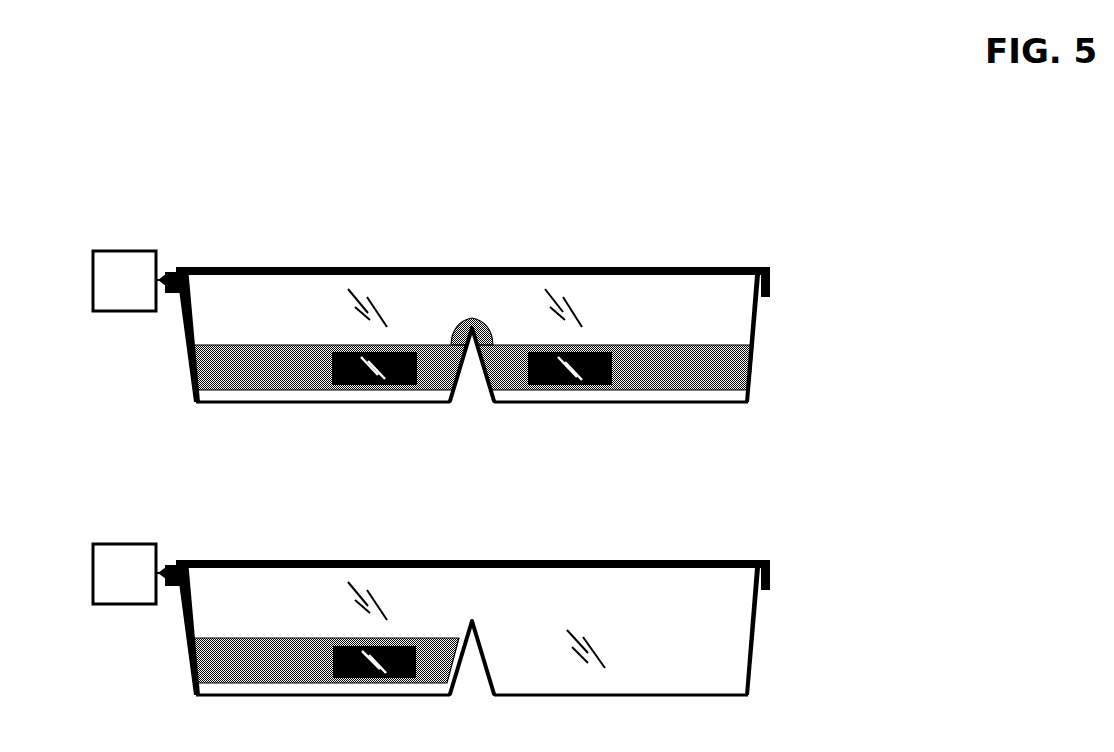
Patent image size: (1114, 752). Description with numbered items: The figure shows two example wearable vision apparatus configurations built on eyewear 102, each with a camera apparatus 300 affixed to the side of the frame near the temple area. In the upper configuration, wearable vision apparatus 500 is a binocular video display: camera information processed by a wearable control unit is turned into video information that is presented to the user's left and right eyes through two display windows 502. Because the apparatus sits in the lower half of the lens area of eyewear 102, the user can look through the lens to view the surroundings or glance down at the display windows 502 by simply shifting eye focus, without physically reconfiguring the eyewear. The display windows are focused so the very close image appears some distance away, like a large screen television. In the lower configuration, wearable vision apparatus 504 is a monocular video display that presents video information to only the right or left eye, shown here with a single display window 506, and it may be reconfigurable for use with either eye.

The eyewear 102 is at (473, 449).
The camera apparatus 300 is at (111, 410).
The wearable vision apparatus 500 is at (448, 374).
The display windows 502 is at (490, 401).
The wearable vision apparatus 504 is at (301, 681).
The display element 506 is at (357, 694).